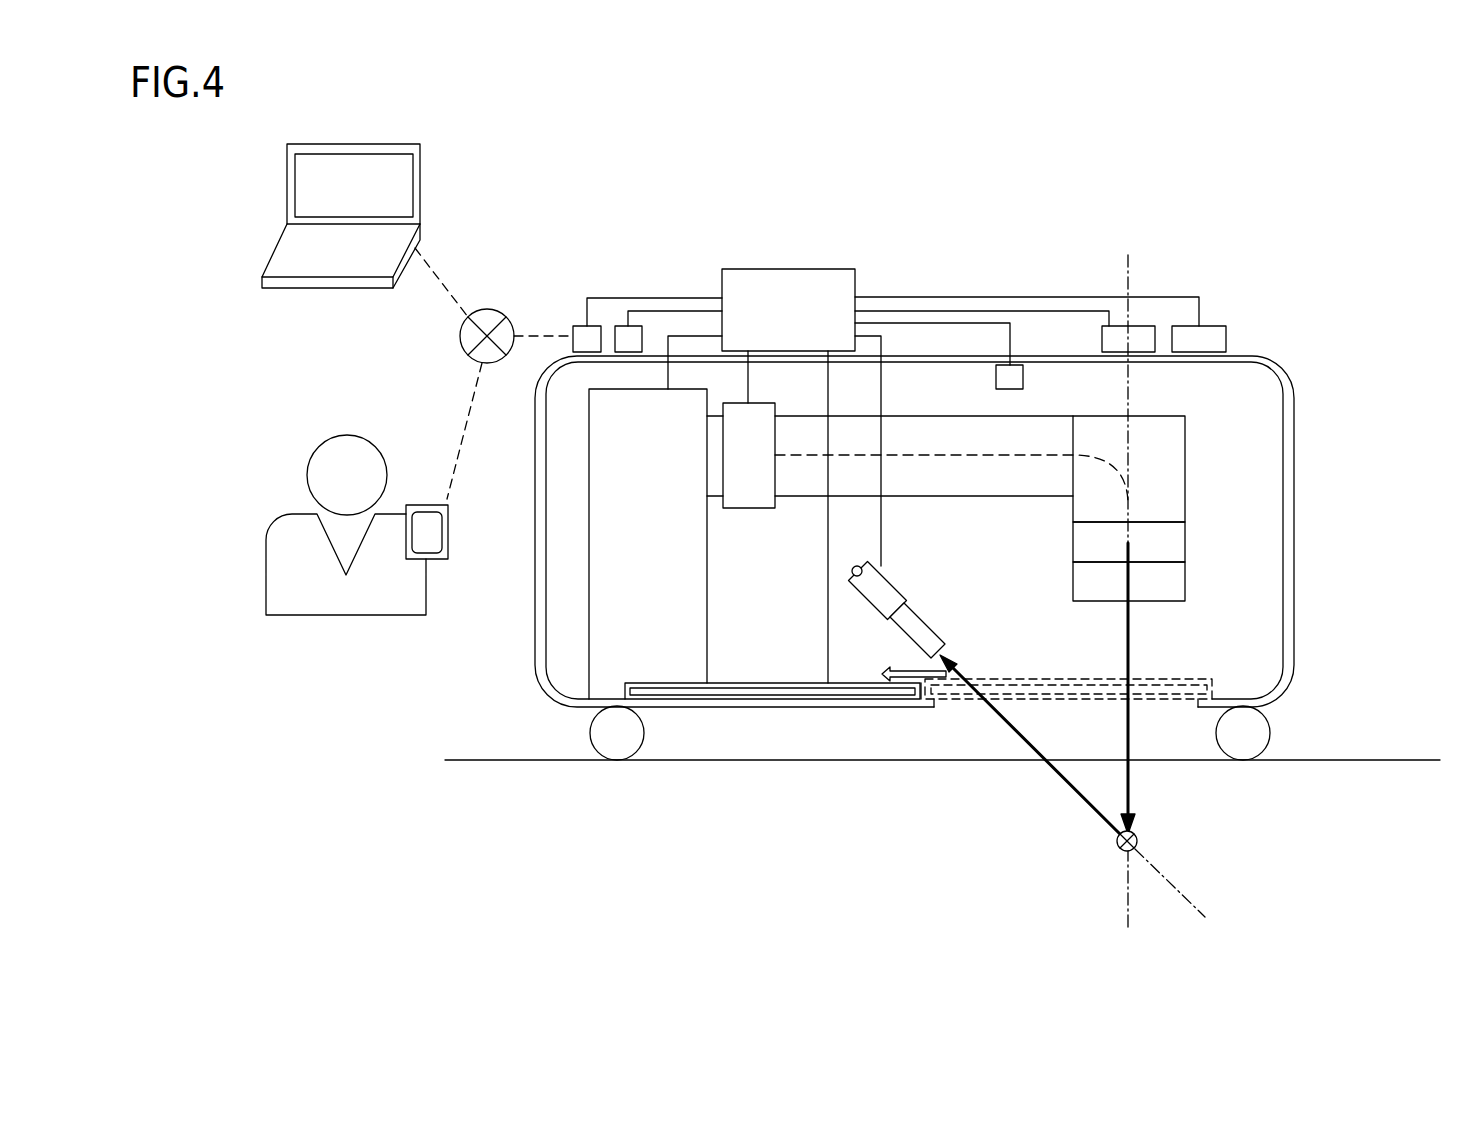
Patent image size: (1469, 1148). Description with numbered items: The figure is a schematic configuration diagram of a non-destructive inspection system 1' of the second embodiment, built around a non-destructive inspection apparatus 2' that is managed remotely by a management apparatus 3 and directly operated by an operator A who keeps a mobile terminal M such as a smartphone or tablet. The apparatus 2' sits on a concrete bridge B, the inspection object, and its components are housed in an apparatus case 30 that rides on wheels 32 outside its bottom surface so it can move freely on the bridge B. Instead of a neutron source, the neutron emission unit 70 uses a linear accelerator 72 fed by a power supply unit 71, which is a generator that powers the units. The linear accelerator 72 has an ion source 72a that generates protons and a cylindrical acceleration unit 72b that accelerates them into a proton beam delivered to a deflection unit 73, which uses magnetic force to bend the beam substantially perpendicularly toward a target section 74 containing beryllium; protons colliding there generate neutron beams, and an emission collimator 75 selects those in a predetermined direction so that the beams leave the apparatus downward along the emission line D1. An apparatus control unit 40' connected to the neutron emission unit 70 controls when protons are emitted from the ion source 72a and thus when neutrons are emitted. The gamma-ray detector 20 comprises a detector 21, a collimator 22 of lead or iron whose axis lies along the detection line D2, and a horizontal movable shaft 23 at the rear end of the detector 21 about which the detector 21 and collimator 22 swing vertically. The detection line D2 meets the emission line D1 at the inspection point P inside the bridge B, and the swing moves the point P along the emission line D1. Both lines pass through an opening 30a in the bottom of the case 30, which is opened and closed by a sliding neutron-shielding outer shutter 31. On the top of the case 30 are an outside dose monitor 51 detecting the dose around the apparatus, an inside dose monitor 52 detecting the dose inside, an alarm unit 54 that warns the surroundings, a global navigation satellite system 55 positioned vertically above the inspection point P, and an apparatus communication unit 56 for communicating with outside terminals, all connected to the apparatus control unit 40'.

The non-destructive inspection system 1' is at (621, 271).
The non-destructive inspection apparatus 2' is at (942, 569).
The management apparatus 3 is at (342, 138).
The operator A is at (347, 435).
The mobile terminal M is at (424, 505).
The apparatus case 30 is at (1285, 352).
The opening 30a is at (936, 708).
The outer shutter 31 is at (735, 683).
The wheels 32 is at (590, 733).
The apparatus control unit 40' is at (801, 450).
The outside dose monitor 51 is at (622, 326).
The inside dose monitor 52 is at (1023, 378).
The alarm unit 54 is at (1215, 323).
The global navigation satellite system 55 is at (1145, 355).
The apparatus communication unit 56 is at (580, 326).
The neutron emission unit 70 is at (1212, 430).
The power supply unit 71 is at (589, 510).
The linear accelerator 72 is at (820, 570).
The ion source 72a is at (748, 508).
The acceleration unit 72b is at (800, 496).
The deflection unit 73 is at (1185, 480).
The target section 74 is at (1185, 540).
The emission collimator 75 is at (1185, 583).
The gamma-ray detector 20 is at (935, 590).
The detector 21 is at (888, 575).
The collimator 22 is at (945, 635).
The movable shaft 23 is at (855, 588).
The inspection point P is at (1140, 840).
The emission line D1 is at (1130, 610).
The detection line D2 is at (1087, 801).
The bridge B is at (1410, 760).